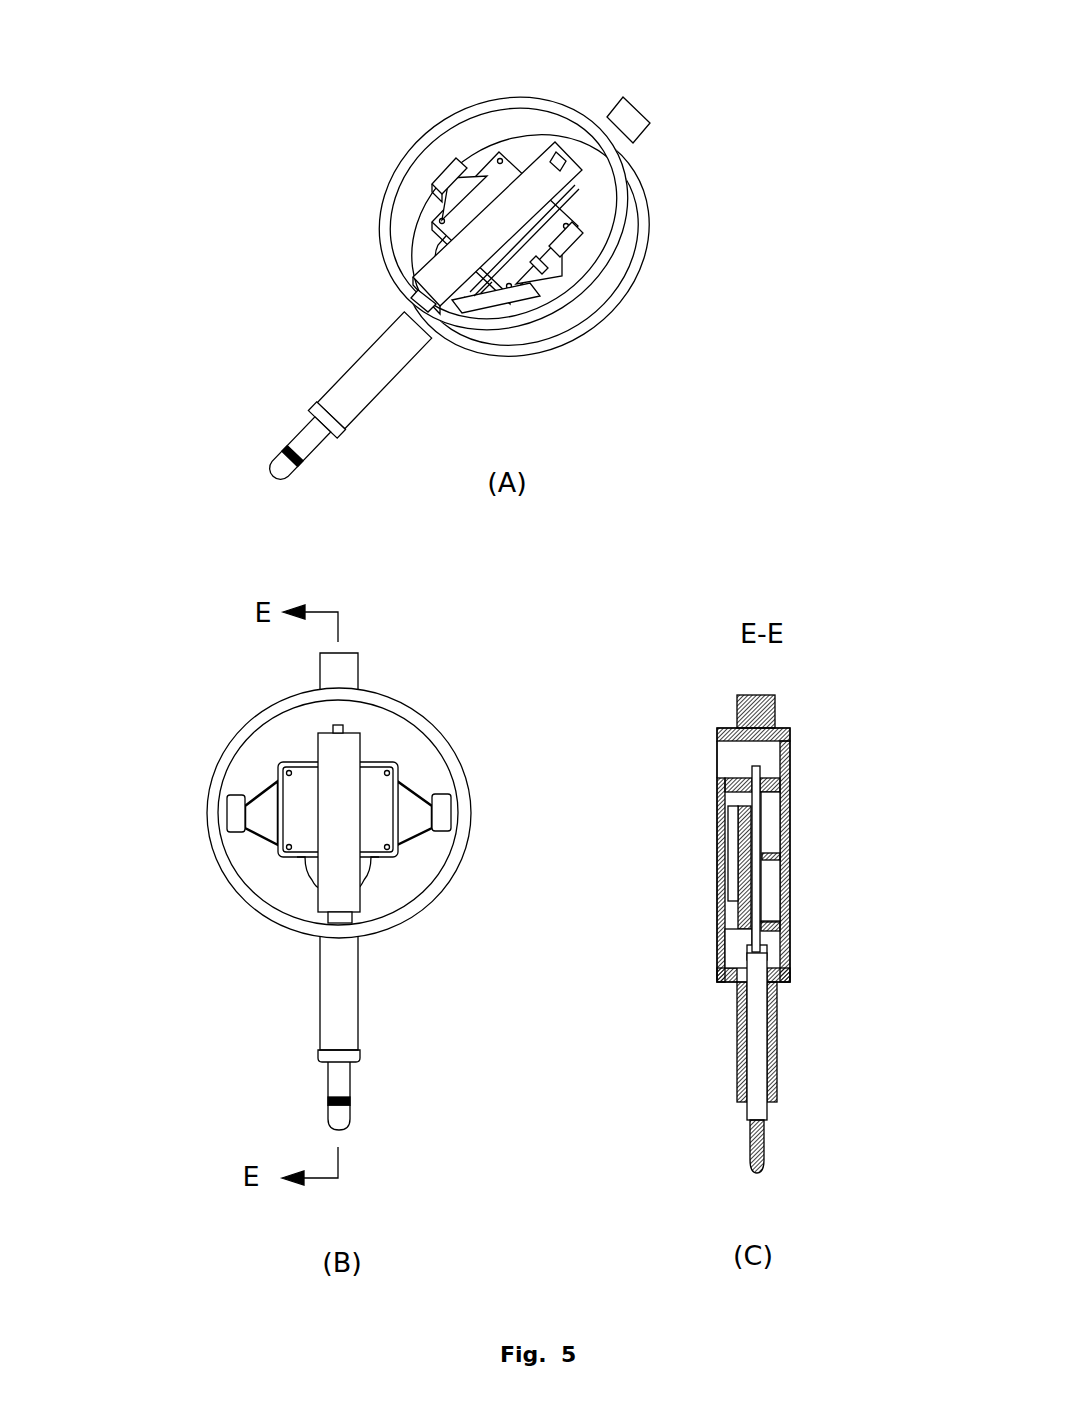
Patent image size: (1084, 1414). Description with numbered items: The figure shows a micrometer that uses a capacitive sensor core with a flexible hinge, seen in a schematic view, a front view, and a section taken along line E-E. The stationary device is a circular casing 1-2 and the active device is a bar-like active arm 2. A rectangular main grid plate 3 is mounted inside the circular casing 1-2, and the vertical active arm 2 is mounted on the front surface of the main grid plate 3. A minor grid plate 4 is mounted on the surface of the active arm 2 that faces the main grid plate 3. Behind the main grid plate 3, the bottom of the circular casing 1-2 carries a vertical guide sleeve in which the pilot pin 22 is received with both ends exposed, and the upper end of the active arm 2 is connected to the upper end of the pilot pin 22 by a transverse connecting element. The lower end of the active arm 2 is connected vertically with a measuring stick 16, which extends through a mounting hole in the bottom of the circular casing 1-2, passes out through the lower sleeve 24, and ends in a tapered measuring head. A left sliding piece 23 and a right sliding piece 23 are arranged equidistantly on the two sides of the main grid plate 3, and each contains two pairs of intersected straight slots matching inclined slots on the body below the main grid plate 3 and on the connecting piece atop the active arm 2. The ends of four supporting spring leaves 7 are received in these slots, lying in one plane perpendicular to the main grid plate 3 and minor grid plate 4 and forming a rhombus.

In FIG. 5A, the circular casing 1-2 is at (605, 273).
In FIG. 5B, the circular casing 1-2 is at (243, 733).
In FIG. 5C, the circular casing 1-2 is at (753, 838).
In FIG. 5A, the active arm 2 is at (538, 170).
In FIG. 5B, the active arm 2 is at (335, 758).
In FIG. 5C, the active arm 2 is at (756, 859).
In FIG. 5A, the main grid plate 3 is at (537, 213).
In FIG. 5B, the main grid plate 3 is at (288, 795).
In FIG. 5C, the main grid plate 3 is at (738, 887).
In FIG. 5A, the minor grid plate 4 is at (542, 262).
In FIG. 5A, the supporting spring leaf 7 is at (582, 240).
In FIG. 5B, the supporting spring leaf 7 is at (262, 830).
In FIG. 5A, the measuring stick 16 is at (310, 433).
In FIG. 5B, the measuring stick 16 is at (339, 1096).
In FIG. 5C, the measuring stick 16 is at (756, 1020).
In FIG. 5C, the pilot pin 22 is at (757, 940).
In FIG. 5A, the sliding piece 23 is at (453, 177).
In FIG. 5B, the sliding piece 23 is at (237, 818).
In FIG. 5A, the lower sleeve 24 is at (377, 367).
In FIG. 5B, the lower sleeve 24 is at (339, 999).
In FIG. 5C, the lower sleeve 24 is at (772, 1063).